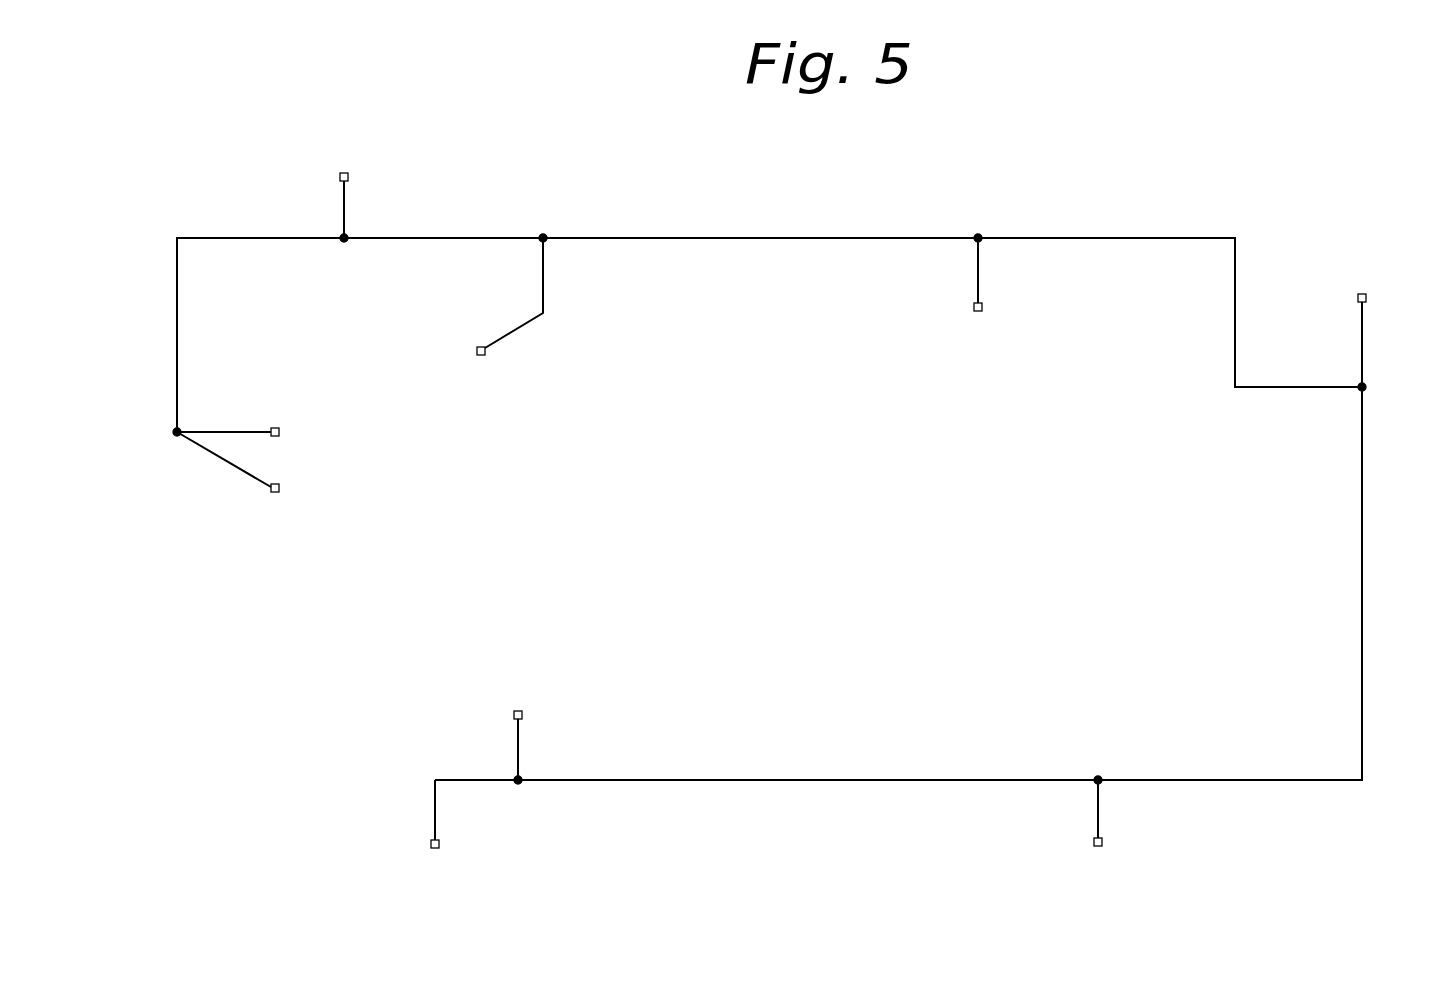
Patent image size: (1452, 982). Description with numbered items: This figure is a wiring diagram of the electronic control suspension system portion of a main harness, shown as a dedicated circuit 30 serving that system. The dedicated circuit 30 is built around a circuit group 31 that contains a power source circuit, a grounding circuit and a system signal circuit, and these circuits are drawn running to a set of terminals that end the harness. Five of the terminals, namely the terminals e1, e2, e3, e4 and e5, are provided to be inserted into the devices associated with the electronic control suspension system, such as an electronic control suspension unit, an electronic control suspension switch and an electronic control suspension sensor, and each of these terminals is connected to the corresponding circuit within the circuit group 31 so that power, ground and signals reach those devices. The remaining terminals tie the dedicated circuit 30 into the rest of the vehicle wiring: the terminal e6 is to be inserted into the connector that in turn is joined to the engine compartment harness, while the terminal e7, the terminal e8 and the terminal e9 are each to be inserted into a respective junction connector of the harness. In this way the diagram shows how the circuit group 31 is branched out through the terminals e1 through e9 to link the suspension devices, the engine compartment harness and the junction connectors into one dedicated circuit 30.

The dedicated circuit 30 is at (578, 540).
The circuit group 31 is at (733, 236).
The terminal e1 is at (249, 468).
The terminal e2 is at (250, 432).
The terminal e3 is at (502, 316).
The terminal e4 is at (1097, 831).
The terminal e5 is at (434, 835).
The terminal e6 is at (1358, 321).
The terminal e7 is at (343, 186).
The terminal e8 is at (977, 291).
The terminal e9 is at (517, 727).